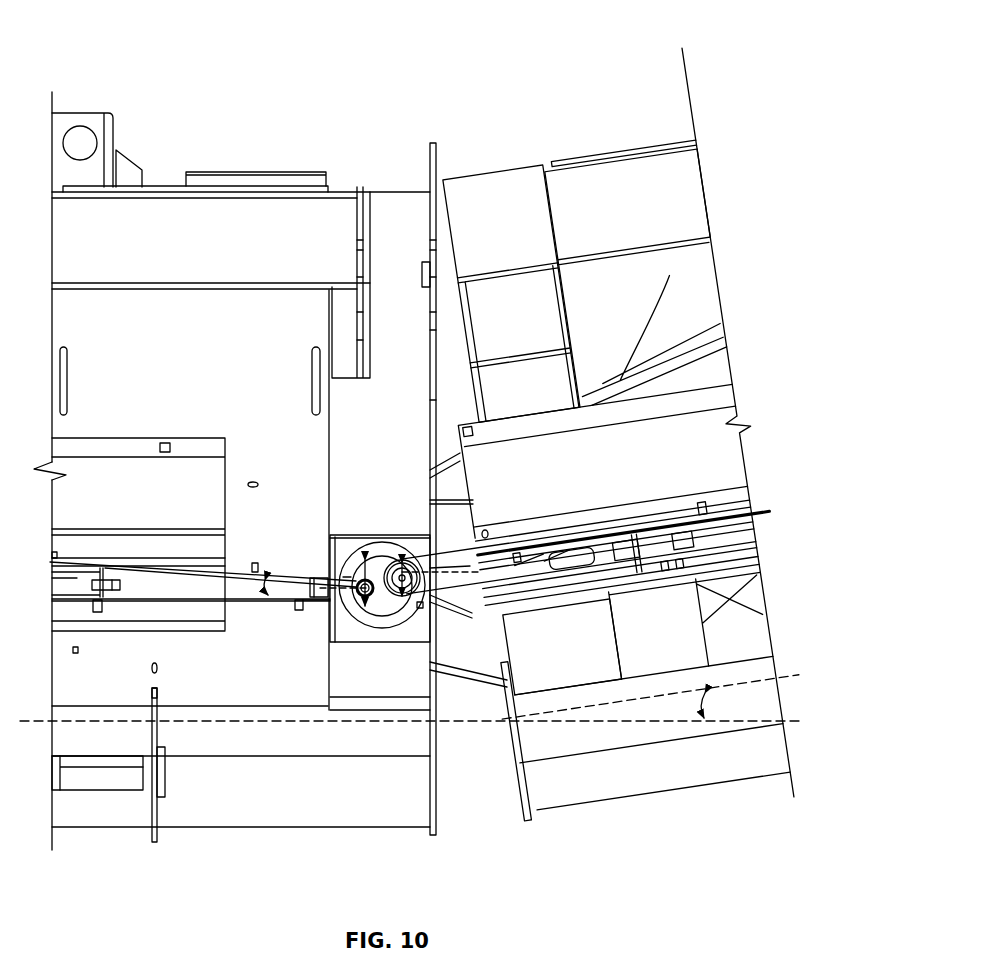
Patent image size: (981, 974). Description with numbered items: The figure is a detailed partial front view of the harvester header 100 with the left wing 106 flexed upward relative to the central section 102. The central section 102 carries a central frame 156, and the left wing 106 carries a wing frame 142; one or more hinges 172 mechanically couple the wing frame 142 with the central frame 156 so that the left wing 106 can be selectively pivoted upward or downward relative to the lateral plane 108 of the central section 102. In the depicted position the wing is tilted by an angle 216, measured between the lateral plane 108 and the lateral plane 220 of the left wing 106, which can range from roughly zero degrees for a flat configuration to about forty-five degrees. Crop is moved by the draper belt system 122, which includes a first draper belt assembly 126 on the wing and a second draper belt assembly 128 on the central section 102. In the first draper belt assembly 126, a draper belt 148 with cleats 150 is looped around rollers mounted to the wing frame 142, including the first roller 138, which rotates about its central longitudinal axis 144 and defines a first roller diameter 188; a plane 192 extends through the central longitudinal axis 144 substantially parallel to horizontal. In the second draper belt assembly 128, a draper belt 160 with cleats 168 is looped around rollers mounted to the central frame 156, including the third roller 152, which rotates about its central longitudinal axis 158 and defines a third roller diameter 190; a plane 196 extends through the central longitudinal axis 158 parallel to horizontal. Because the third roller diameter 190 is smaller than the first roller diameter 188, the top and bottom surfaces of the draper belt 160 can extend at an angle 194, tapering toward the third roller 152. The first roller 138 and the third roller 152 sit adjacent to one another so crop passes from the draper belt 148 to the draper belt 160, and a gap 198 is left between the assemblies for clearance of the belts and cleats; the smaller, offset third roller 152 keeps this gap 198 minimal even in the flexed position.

The harvester header 100 is at (422, 48).
The central section 102 is at (152, 112).
The left wing 106 is at (583, 70).
The lateral plane 108 is at (73, 722).
The draper belt system 122 is at (254, 470).
The first draper belt assembly 126 is at (633, 517).
The second draper belt assembly 128 is at (145, 552).
The first roller 138 is at (435, 593).
The wing frame 142 is at (492, 185).
The central longitudinal axis 144 is at (397, 547).
The draper belt 148 is at (750, 560).
The cleats 150 is at (698, 507).
The third roller 152 is at (386, 600).
The central frame 156 is at (163, 190).
The central longitudinal axis 158 is at (347, 577).
The draper belt 160 is at (135, 600).
The cleats 168 is at (254, 563).
The hinge 172 is at (390, 540).
The first roller diameter 188 is at (435, 570).
The third roller diameter 190 is at (365, 603).
The plane 192 is at (470, 570).
The angle 194 is at (268, 594).
The plane 196 is at (328, 605).
The gap 198 is at (392, 607).
The angle 216 is at (710, 707).
The lateral plane 220 is at (758, 678).